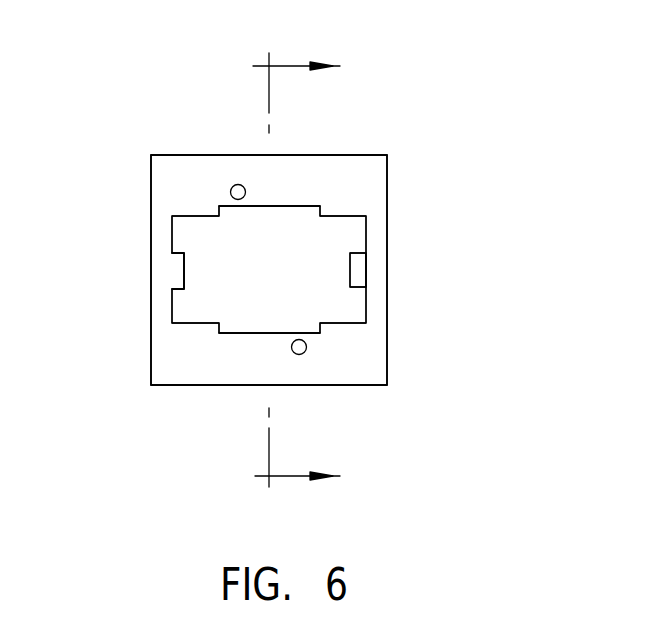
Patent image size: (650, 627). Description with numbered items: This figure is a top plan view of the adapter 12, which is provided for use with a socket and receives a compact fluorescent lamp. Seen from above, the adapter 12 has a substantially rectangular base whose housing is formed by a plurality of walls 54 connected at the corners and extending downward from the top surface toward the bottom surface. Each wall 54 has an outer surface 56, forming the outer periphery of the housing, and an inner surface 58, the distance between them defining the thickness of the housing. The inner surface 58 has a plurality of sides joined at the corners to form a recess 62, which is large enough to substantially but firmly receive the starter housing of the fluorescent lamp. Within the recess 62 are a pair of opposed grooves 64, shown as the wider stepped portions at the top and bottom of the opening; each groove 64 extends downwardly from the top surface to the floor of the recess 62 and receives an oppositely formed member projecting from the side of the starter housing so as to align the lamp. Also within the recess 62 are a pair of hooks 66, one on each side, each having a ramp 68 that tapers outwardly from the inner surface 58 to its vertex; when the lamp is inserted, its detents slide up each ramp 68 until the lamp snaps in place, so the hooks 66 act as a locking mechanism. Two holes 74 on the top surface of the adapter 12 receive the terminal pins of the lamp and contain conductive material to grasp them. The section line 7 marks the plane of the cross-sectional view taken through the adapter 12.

The section line 7- 7 is at (296, 275).
The adapter 12 is at (425, 247).
The wall 54 is at (237, 167).
The outer surface 56 is at (210, 155).
The inner surface 58 is at (341, 216).
The recess 62 is at (269, 269).
The groove 64 is at (263, 206).
The hook 66 is at (357, 258).
The ramp 68 is at (362, 275).
The hole 74 is at (230, 192).